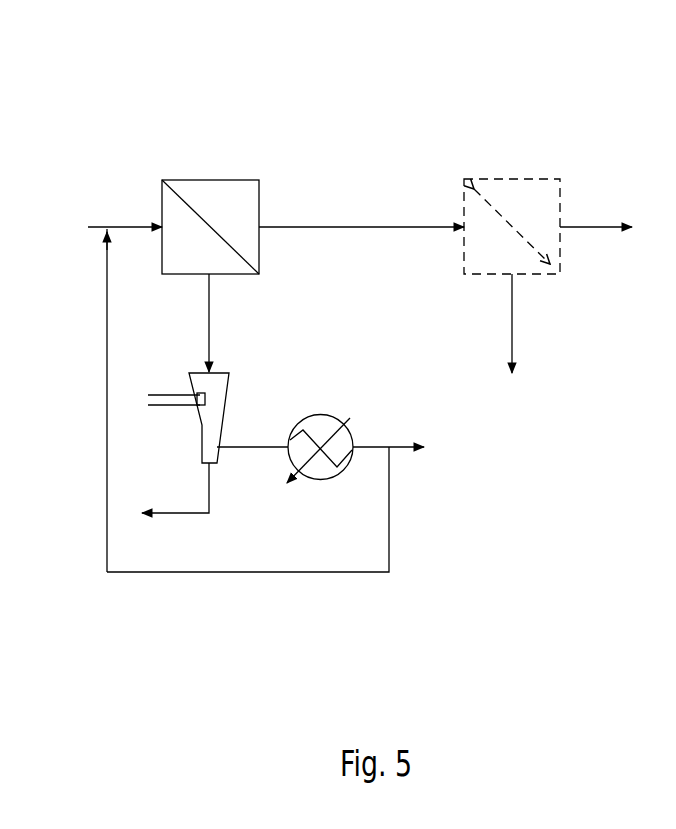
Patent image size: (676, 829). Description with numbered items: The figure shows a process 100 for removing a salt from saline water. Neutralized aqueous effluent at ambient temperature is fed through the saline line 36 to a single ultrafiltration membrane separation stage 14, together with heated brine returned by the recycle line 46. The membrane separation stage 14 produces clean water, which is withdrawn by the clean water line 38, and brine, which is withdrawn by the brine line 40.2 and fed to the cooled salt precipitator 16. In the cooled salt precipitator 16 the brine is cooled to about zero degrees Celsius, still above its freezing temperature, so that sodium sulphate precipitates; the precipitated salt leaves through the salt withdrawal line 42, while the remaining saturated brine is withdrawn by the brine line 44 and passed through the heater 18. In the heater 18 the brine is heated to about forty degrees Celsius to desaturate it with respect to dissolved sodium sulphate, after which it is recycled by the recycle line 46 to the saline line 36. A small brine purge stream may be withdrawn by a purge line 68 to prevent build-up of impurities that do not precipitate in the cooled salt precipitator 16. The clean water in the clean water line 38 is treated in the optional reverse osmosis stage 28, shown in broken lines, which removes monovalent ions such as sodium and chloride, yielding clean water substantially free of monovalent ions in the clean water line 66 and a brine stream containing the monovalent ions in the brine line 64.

The process 100 is at (411, 110).
The membrane separation stage 14 is at (210, 180).
The reverse osmosis stage 28 is at (517, 177).
The cooled salt precipitator 16 is at (200, 371).
The heater 18 is at (340, 472).
The saline line 36 is at (96, 227).
The clean water line 38 is at (402, 227).
The brine line 40.2 is at (209, 288).
The salt withdrawal line 42 is at (209, 500).
The brine line 44 is at (252, 447).
The recycle line 46 is at (390, 497).
The brine line 64 is at (512, 300).
The clean water line 66 is at (578, 227).
The purge line 68 is at (375, 447).